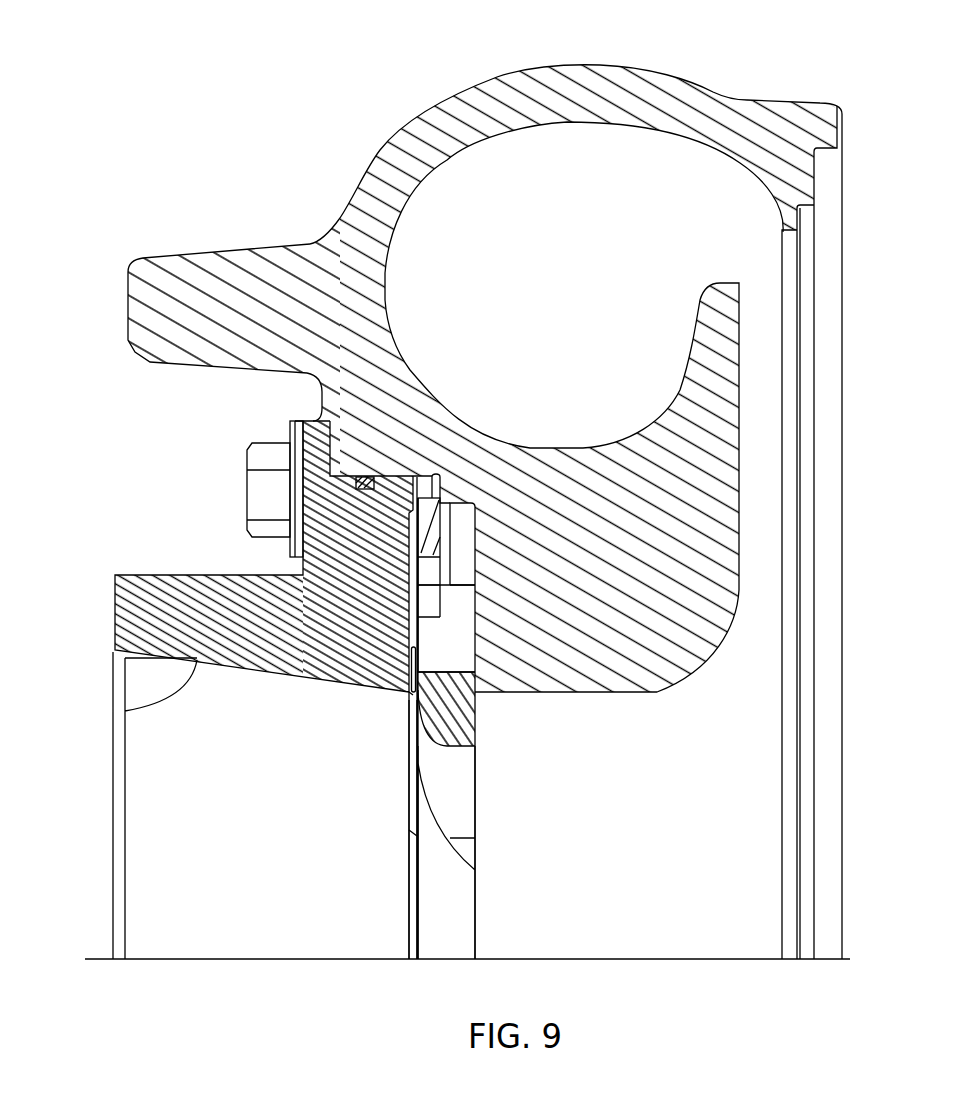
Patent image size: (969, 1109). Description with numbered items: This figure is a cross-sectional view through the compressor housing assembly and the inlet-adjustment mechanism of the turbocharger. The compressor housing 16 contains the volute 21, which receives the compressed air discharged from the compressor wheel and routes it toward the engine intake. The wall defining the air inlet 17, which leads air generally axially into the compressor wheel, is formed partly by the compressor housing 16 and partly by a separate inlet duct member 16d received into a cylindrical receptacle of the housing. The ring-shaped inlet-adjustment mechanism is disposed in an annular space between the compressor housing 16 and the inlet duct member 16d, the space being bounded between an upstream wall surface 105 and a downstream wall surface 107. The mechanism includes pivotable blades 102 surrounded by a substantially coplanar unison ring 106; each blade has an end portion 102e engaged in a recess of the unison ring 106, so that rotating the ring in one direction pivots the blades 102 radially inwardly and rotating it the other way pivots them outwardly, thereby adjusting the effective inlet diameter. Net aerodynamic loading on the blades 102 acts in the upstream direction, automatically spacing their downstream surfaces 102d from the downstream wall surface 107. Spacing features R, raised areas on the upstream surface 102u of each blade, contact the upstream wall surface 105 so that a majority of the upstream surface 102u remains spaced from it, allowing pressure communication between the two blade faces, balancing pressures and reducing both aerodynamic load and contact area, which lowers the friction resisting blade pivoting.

The compressor housing 16 is at (263, 258).
The volute 21 is at (535, 207).
The inlet duct member 16d is at (150, 600).
The air inlet 17 is at (125, 711).
The unison ring 106 is at (428, 508).
The downstream wall surface 107 is at (462, 647).
The end portion 102e is at (460, 595).
The upstream wall surface 105 is at (418, 630).
The downstream surface 102d is at (478, 712).
The upstream surface 102u is at (413, 793).
The blade 102 is at (450, 762).
The spacing features R is at (413, 695).